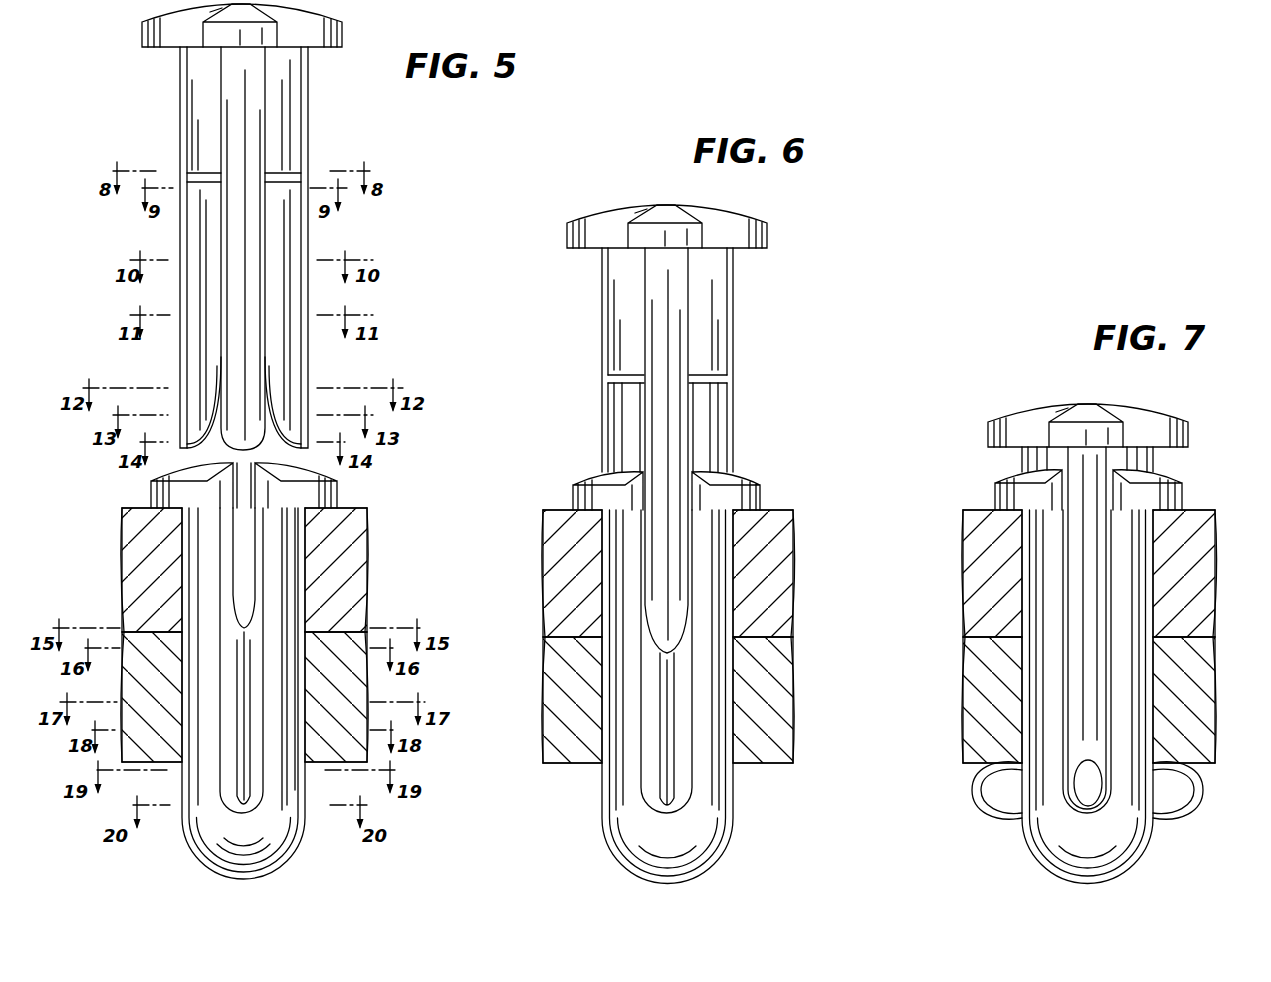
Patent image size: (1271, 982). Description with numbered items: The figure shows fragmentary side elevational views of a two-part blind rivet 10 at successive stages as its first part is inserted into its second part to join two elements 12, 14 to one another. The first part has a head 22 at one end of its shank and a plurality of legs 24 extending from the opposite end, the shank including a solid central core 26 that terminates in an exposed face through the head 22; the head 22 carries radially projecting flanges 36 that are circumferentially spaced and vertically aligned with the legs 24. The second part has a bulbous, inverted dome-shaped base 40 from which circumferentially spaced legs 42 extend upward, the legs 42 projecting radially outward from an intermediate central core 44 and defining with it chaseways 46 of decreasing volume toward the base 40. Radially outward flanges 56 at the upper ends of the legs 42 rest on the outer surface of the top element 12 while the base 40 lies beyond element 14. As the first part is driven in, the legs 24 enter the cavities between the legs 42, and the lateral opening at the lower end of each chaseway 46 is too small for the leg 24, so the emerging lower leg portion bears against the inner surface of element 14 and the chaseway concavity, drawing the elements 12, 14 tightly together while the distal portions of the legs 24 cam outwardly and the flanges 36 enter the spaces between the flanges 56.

In FIG. 5, the two-part blind rivet 10 is at (400, 329).
In FIG. 5, the element 12 is at (337, 584).
In FIG. 6, the element 12 is at (557, 543).
In FIG. 7, the element 12 is at (1185, 598).
In FIG. 5, the element 14 is at (137, 680).
In FIG. 6, the element 14 is at (555, 667).
In FIG. 7, the element 14 is at (1208, 747).
In FIG. 5, the head 22 is at (160, 29).
In FIG. 5, the legs 24 is at (291, 239).
In FIG. 6, the legs 24 is at (620, 424).
In FIG. 7, the legs 24 is at (1077, 662).
In FIG. 5, the solid central core 26 is at (253, 98).
In FIG. 6, the solid central core 26 is at (673, 338).
In FIG. 5, the flanges 36 is at (342, 33).
In FIG. 6, the flanges 36 is at (770, 241).
In FIG. 7, the flanges 36 is at (988, 437).
In FIG. 5, the base 40 is at (267, 840).
In FIG. 6, the base 40 is at (713, 832).
In FIG. 7, the base 40 is at (1127, 843).
In FIG. 5, the legs 42 is at (208, 717).
In FIG. 6, the legs 42 is at (707, 733).
In FIG. 7, the legs 42 is at (1038, 578).
In FIG. 5, the central core 44 is at (237, 762).
In FIG. 5, the chaseways 46 is at (250, 763).
In FIG. 5, the flanges 56 is at (163, 492).
In FIG. 6, the flanges 56 is at (576, 492).
In FIG. 7, the flanges 56 is at (1000, 495).